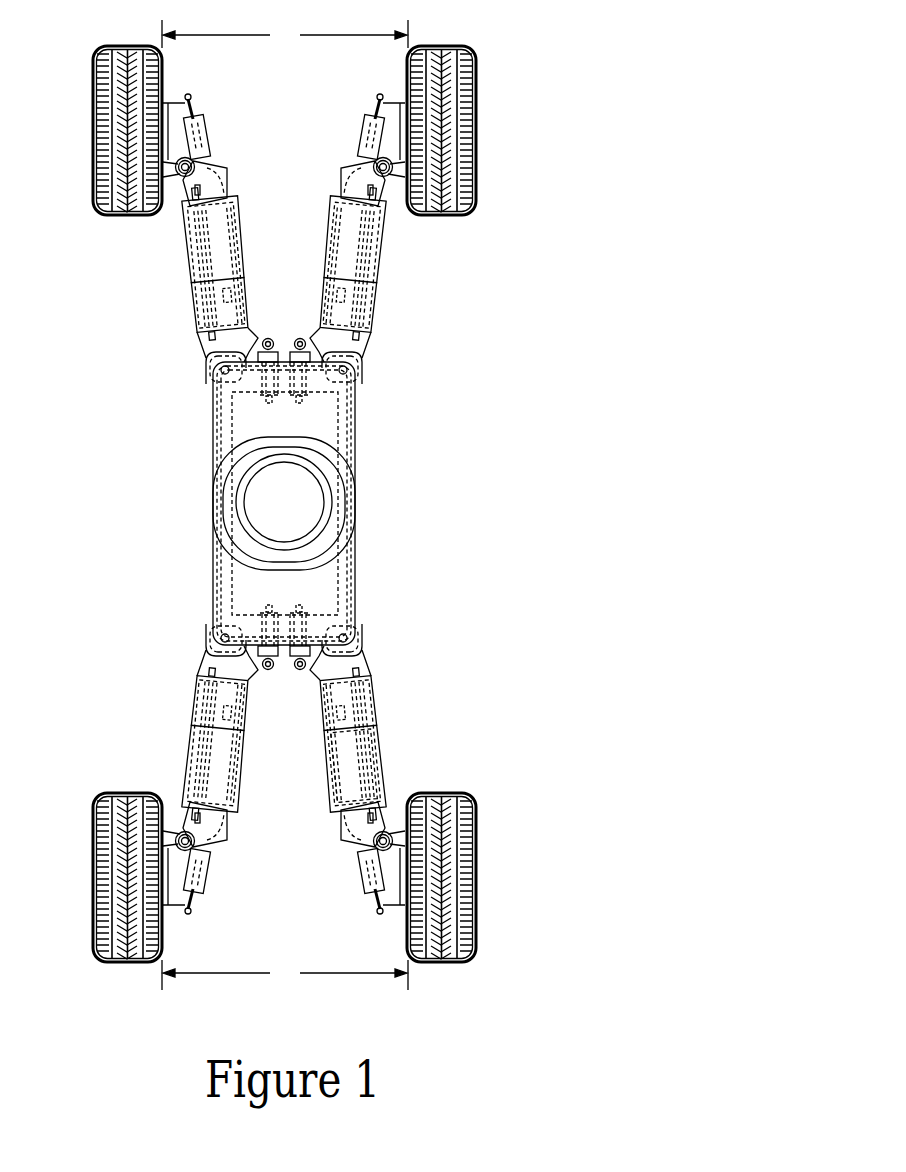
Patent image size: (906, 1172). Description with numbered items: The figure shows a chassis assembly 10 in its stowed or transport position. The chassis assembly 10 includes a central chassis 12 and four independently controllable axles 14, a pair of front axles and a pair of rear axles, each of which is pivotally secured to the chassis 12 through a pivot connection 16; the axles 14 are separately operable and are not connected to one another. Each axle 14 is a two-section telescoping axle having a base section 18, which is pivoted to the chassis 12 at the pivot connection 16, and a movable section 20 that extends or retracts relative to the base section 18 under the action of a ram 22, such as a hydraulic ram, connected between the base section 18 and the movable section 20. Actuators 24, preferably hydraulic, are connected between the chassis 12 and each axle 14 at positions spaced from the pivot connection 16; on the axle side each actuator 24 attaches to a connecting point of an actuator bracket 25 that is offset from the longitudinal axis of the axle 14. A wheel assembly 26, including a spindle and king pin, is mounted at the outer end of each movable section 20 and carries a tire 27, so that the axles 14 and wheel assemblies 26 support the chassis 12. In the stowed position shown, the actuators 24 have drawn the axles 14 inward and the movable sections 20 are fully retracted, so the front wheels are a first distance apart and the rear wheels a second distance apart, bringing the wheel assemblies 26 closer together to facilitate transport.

The chassis assembly 10 is at (426, 505).
The chassis 12 is at (345, 583).
The axle 14 is at (193, 298).
The pivot connection 16 is at (347, 637).
The base section 18 is at (208, 643).
The movable section 20 is at (181, 836).
The ram 22 is at (372, 746).
The actuator 24 is at (300, 387).
The actuator bracket 25 is at (296, 340).
The wheel assembly 26 is at (524, 832).
The tire 27 is at (468, 175).